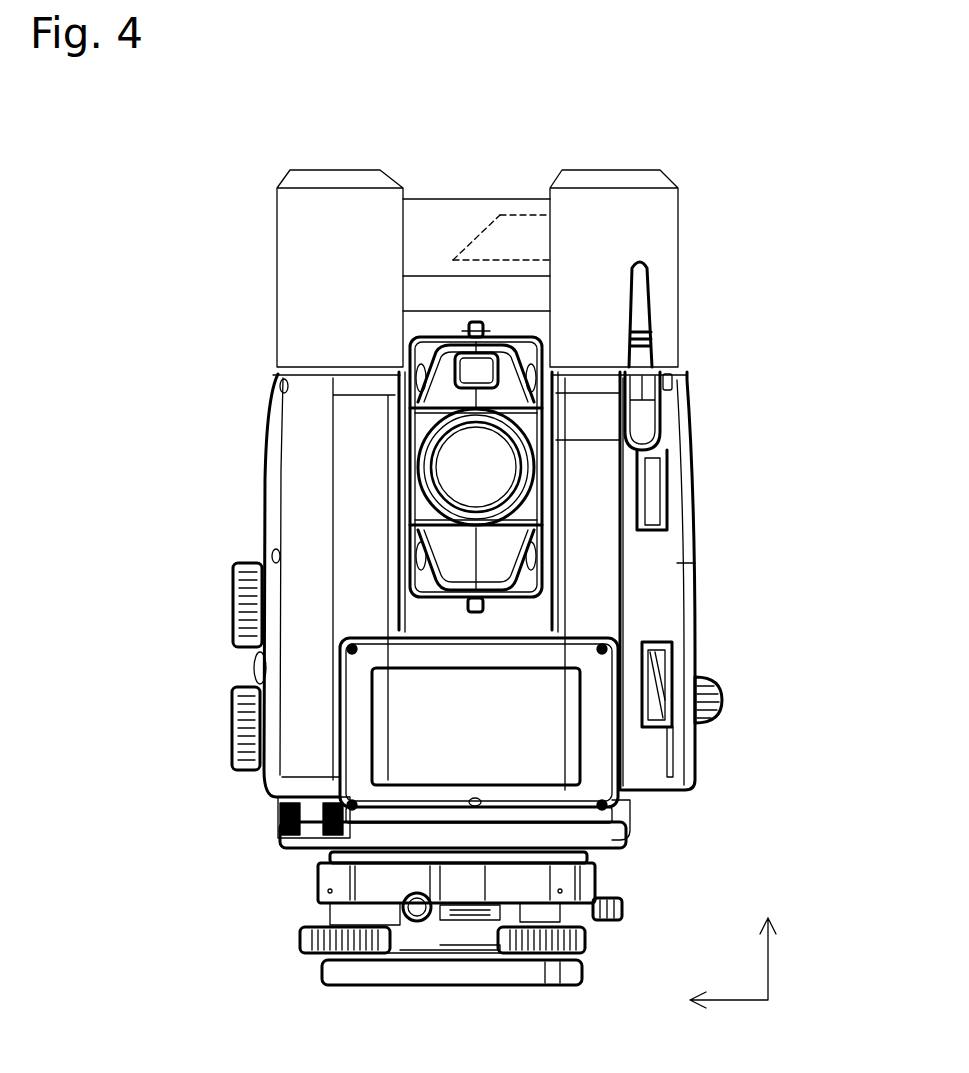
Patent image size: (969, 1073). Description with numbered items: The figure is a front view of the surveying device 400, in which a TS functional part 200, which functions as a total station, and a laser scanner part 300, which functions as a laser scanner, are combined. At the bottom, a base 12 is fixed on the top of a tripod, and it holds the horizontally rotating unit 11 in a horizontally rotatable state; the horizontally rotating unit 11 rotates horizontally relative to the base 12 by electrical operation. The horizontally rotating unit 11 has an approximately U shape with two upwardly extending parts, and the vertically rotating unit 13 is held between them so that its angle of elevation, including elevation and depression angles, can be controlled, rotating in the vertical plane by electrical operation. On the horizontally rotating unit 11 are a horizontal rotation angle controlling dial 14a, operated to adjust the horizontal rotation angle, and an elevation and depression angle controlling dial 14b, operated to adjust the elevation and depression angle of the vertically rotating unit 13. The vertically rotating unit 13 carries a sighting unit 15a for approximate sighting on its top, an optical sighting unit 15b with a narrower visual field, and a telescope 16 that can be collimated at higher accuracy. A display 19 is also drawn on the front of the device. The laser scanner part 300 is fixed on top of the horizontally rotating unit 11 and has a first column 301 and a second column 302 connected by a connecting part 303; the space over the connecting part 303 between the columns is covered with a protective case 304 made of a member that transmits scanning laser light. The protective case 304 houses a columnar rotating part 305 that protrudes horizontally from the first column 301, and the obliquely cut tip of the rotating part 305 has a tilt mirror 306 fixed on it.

The horizontally rotating unit 11 is at (300, 478).
The base 12 is at (340, 884).
The vertically rotating unit 13 is at (495, 566).
The horizontal rotation angle controlling dial 14a is at (240, 584).
The elevation and depression angle controlling dial 14b is at (240, 708).
The sighting unit 15a is at (460, 330).
The optical sighting unit 15b is at (518, 345).
The telescope 16 is at (500, 460).
The display unit 19 is at (555, 766).
The TS functional part 200 is at (702, 506).
The laser scanner part 300 is at (274, 228).
The first column 301 is at (613, 210).
The second column 302 is at (372, 206).
The connecting part 303 is at (424, 290).
The protective case 304 is at (427, 196).
The rotating part 305 is at (527, 228).
The tilt mirror 306 is at (474, 230).
The surveying device 400 is at (805, 158).